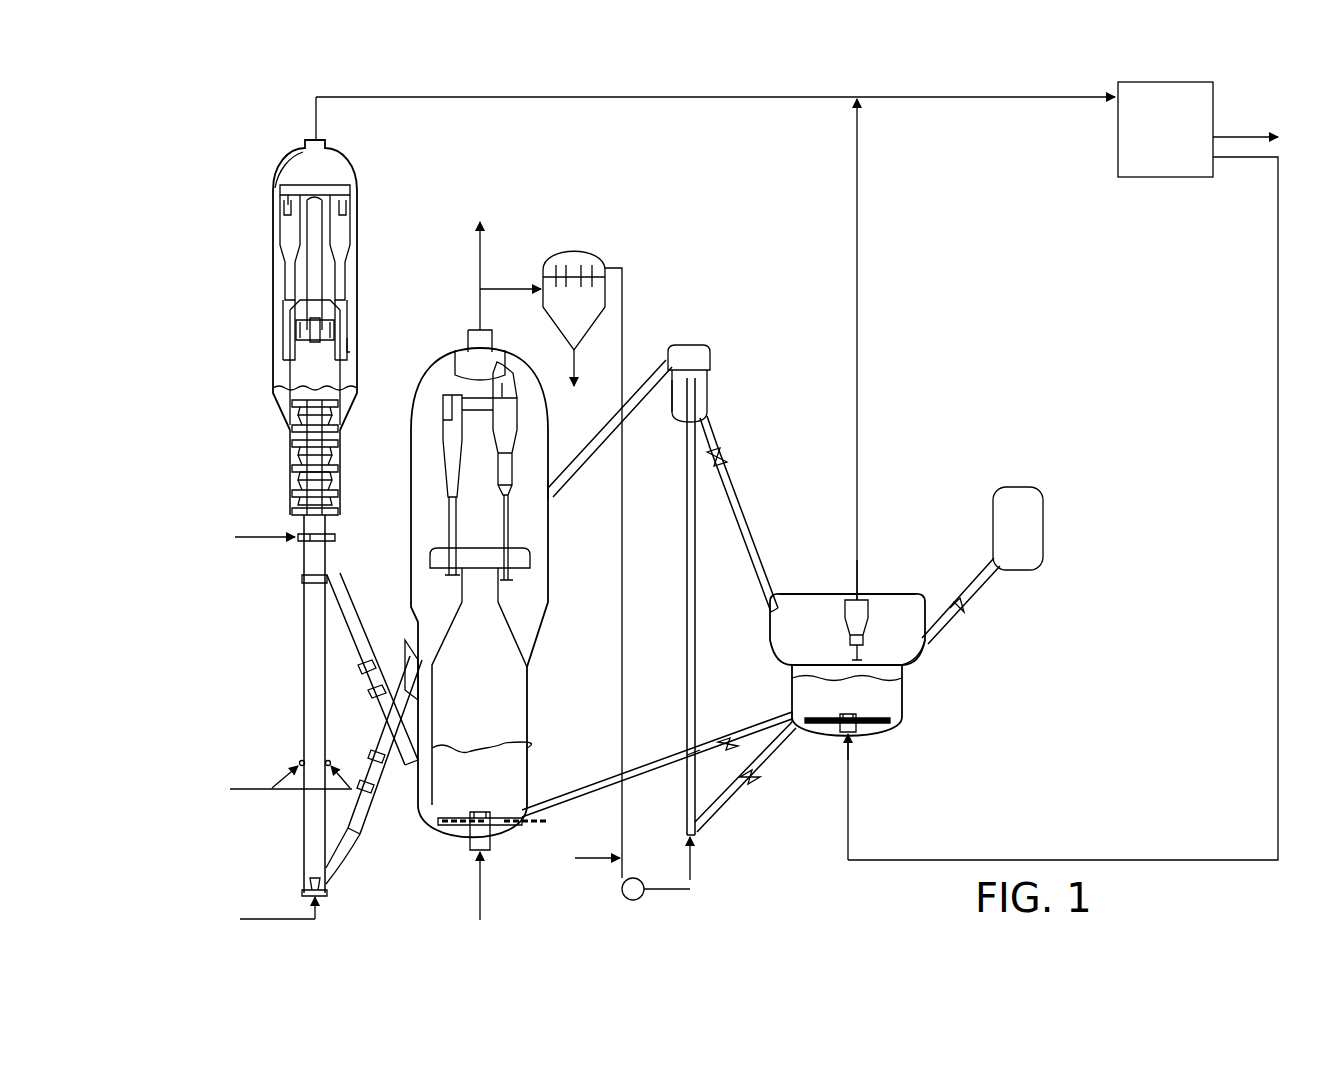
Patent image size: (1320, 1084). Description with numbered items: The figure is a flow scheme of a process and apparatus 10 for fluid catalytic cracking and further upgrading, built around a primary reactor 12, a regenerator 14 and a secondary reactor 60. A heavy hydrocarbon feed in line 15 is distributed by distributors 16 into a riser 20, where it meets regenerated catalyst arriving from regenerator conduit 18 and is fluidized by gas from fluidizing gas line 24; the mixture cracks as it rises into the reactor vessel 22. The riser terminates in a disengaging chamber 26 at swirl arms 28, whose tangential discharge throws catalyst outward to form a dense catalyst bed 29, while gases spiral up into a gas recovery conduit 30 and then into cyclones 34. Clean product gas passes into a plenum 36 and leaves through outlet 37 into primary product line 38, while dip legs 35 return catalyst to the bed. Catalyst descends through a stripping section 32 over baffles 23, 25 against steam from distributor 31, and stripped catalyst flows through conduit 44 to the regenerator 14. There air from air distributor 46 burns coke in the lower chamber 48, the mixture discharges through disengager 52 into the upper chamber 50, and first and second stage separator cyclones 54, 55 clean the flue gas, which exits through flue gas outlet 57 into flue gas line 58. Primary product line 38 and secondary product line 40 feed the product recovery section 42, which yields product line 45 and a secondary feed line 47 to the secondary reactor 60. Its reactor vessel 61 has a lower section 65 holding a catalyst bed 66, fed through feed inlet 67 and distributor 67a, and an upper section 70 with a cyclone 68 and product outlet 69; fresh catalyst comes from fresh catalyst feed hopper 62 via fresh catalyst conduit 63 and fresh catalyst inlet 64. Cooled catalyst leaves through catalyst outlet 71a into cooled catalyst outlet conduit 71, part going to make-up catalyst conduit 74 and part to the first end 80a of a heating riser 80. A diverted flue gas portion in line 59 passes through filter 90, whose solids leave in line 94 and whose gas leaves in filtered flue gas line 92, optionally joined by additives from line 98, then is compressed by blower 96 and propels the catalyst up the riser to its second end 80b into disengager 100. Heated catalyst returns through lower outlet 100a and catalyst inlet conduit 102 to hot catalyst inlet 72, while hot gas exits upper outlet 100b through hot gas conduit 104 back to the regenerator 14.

The process and apparatus 10 is at (152, 202).
The primary reactor 12 is at (366, 168).
The regenerator 14 is at (486, 180).
The line 15 is at (263, 789).
The distributors 16 is at (302, 760).
The regenerator conduit 18 is at (360, 812).
The riser 20 is at (325, 665).
The reactor vessel 22 is at (353, 340).
The baffles 23 is at (338, 445).
The fluidizing gas line 24 is at (288, 919).
The baffles 25 is at (330, 470).
The disengaging chamber 26 is at (292, 372).
The swirl arms 28 is at (285, 334).
The dense catalyst bed 29 is at (283, 406).
The gas recovery conduit 30 is at (318, 290).
The distributor 31 is at (298, 542).
The stripping section 32 is at (292, 456).
The cyclones 34 is at (284, 226).
The dip leg 35 is at (349, 353).
The plenum 36 is at (283, 172).
The outlet 37 is at (325, 143).
The primary product line 38 is at (316, 123).
The secondary product line 40 is at (856, 224).
The product recovery section 42 is at (1118, 137).
The conduit 44 is at (346, 608).
The product line 45 is at (1240, 137).
The air distributor 46 is at (505, 812).
The secondary feed line 47 is at (1278, 282).
The lower chamber 48 is at (506, 705).
The upper chamber 50 is at (549, 510).
The disengager 52 is at (522, 556).
The first stage separator cyclone 54 is at (440, 440).
The second stage separator cyclone 55 is at (522, 424).
The flue gas outlet 57 is at (494, 345).
The flue gas line 58 is at (478, 312).
The line 59 is at (496, 288).
The secondary reactor 60 is at (1015, 642).
The reactor vessel 61 is at (903, 692).
The fresh catalyst feed hopper 62 is at (1012, 487).
The fresh catalyst conduit 63 is at (985, 590).
The fresh catalyst inlet 64 is at (922, 642).
The lower section 65 is at (878, 737).
The catalyst bed 66 is at (792, 688).
The feed inlet 67 is at (840, 740).
The distributor 67a is at (903, 722).
The cyclone 68 is at (866, 595).
The product outlet 69 is at (852, 598).
The upper section 70 is at (790, 592).
The cooled catalyst outlet conduit 71 is at (760, 772).
The catalyst outlet 71a is at (800, 728).
The hot catalyst inlet 72 is at (768, 628).
The make-up catalyst conduit 74 is at (668, 752).
The heating riser 80 is at (696, 735).
The first end 80a is at (697, 835).
The second end 80b is at (697, 387).
The filter 90 is at (586, 246).
The filtered flue gas line 92 is at (624, 298).
The line 94 is at (572, 358).
The blower 96 is at (620, 893).
The line 98 is at (575, 858).
The disengager 100 is at (705, 346).
The lower outlet 100a is at (710, 419).
The upper outlet 100b is at (672, 392).
The catalyst inlet conduit 102 is at (726, 490).
The hot gas conduit 104 is at (580, 445).